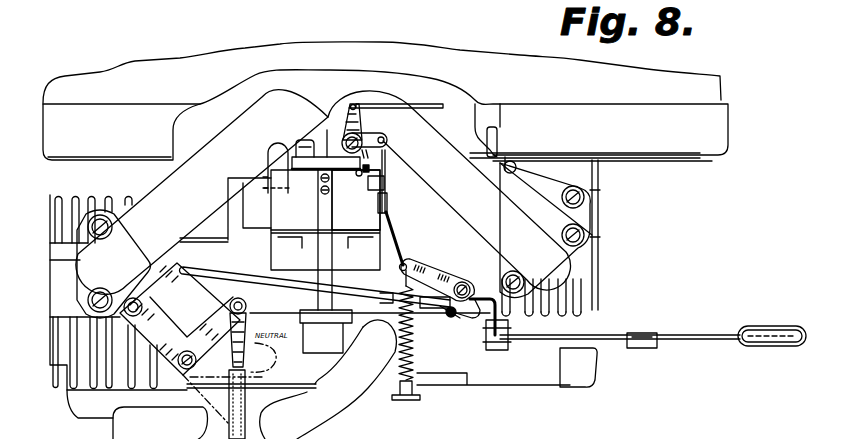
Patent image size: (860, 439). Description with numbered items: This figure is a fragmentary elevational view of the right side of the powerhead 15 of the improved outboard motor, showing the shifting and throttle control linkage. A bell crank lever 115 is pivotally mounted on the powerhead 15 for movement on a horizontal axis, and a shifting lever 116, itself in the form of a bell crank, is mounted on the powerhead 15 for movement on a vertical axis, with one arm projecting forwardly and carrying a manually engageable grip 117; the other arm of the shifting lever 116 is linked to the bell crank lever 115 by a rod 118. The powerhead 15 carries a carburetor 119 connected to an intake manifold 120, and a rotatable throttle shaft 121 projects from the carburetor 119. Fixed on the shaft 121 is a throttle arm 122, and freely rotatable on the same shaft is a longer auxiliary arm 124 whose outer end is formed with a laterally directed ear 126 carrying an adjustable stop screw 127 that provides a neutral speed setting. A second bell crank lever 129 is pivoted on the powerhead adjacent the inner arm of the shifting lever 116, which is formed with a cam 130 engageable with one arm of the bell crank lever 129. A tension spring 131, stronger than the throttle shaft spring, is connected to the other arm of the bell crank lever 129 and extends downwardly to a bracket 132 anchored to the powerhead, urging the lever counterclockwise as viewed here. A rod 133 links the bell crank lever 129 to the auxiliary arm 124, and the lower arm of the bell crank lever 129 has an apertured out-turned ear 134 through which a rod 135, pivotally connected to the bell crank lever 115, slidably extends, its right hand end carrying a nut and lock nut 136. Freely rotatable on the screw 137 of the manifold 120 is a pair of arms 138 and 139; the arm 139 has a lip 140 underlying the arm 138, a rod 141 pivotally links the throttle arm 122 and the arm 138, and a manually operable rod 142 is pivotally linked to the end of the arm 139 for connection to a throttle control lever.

The powerhead 15 is at (606, 204).
The bell crank lever 115 is at (154, 380).
The shifting lever 116 is at (720, 340).
The manually engageable grip 117 is at (773, 345).
The rod 118 is at (283, 280).
The carburetor 119 is at (292, 209).
The intake manifold 120 is at (220, 176).
The throttle shaft 121 is at (388, 186).
The throttle arm 122 is at (389, 201).
The auxiliary arm 124 is at (378, 186).
The laterally directed ear 126 is at (380, 160).
The adjustable stop screw 127 is at (363, 167).
The bell crank lever 129 is at (445, 272).
The cam 130 is at (470, 318).
The tension spring 131 is at (413, 333).
The bracket 132 is at (410, 387).
The rod 133 is at (400, 234).
The apertured out-turned ear 134 is at (447, 313).
The rod 135 is at (393, 335).
The nut and lock nut 136 is at (452, 318).
The screw 137 is at (347, 139).
The arm 138 is at (365, 137).
The arm 139 is at (348, 114).
The lip 140 is at (369, 162).
The rod 141 is at (362, 172).
The manually operable rod 142 is at (410, 104).